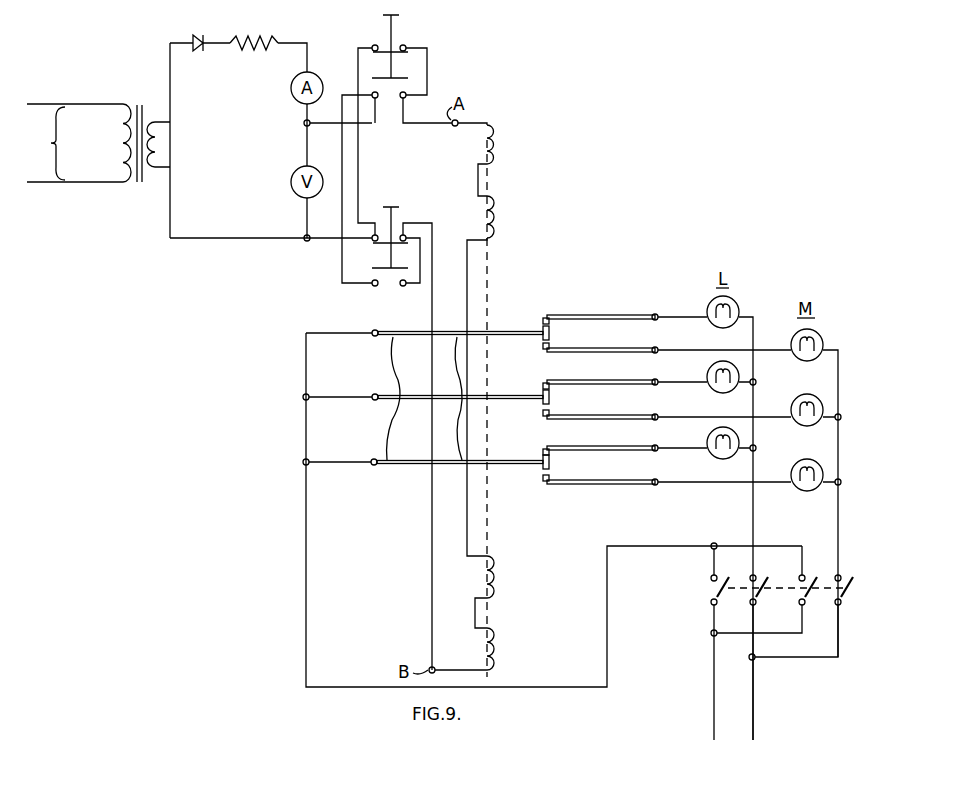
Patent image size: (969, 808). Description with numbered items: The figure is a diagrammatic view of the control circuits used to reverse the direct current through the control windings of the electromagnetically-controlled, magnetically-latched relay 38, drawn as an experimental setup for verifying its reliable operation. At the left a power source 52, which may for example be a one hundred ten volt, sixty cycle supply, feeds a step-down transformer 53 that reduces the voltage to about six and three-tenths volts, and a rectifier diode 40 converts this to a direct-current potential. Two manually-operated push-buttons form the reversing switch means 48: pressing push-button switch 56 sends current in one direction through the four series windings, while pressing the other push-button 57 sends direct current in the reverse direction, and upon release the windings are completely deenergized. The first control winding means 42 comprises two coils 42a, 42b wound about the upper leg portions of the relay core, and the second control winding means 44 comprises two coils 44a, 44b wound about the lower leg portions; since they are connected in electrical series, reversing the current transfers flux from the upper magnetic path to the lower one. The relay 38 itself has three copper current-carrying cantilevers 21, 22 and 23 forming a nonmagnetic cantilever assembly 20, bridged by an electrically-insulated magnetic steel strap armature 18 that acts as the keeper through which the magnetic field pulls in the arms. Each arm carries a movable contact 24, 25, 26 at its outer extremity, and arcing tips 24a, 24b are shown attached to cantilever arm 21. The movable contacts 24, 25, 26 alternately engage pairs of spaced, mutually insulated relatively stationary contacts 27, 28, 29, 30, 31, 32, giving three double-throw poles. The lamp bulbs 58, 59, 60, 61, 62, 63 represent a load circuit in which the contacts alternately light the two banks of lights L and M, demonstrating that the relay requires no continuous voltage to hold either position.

The power source 52 is at (75, 143).
The step-down transformer 53 is at (133, 102).
The rectifier diode 40 is at (202, 32).
The push-button switch 56 is at (385, 26).
The push-button 57 is at (392, 226).
The reversing switch means 48 is at (435, 158).
The relay 38 is at (527, 278).
The first control winding means 42 is at (484, 340).
The coil 42a is at (486, 143).
The coil 42b is at (486, 215).
The second control winding means 44 is at (477, 613).
The coil 44a is at (486, 571).
The coil 44b is at (465, 649).
The armature 18 is at (400, 375).
The cantilever assembly 20 is at (462, 382).
The contact arm 21 is at (384, 329).
The contact arm 22 is at (387, 397).
The contact arm 23 is at (397, 466).
The movable contact 24 is at (551, 333).
The arcing tip 24a is at (543, 326).
The arcing tip 24b is at (543, 338).
The movable contact 25 is at (551, 397).
The movable contact 26 is at (551, 462).
The stationary contact 27 is at (545, 313).
The stationary contact 28 is at (543, 352).
The stationary contact 29 is at (551, 371).
The stationary contact 30 is at (543, 418).
The stationary contact 31 is at (546, 448).
The stationary contact 32 is at (545, 484).
The lamp bulb 58 is at (716, 329).
The lamp bulb 59 is at (706, 380).
The lamp bulb 60 is at (706, 445).
The lamp bulb 61 is at (807, 360).
The lamp bulb 62 is at (792, 408).
The lamp bulb 63 is at (794, 468).